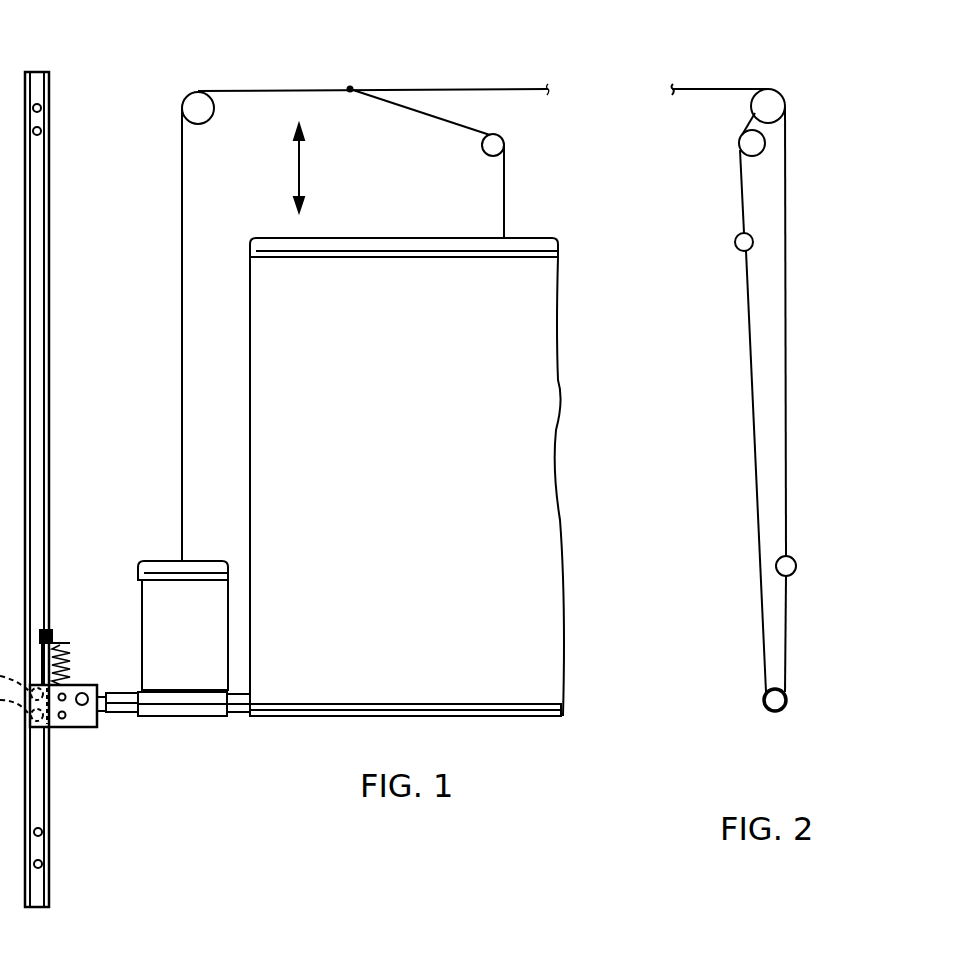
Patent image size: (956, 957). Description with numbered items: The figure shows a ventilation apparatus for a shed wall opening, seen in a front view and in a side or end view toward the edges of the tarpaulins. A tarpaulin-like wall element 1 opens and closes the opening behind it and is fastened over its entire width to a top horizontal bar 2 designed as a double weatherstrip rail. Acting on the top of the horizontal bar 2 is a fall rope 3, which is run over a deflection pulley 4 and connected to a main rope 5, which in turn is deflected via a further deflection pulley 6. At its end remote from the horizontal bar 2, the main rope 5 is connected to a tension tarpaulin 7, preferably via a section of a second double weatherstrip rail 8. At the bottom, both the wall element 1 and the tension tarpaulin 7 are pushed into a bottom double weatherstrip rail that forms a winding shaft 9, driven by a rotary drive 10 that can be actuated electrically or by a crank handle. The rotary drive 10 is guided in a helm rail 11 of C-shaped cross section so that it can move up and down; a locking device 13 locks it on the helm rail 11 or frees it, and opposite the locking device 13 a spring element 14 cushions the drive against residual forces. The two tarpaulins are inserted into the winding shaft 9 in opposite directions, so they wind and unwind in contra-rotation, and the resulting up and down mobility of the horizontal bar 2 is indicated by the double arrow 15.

In FIG. 1, the tarpaulin-like wall element 1 is at (545, 430).
In FIG. 2, the tarpaulin-like wall element 1 is at (756, 515).
In FIG. 1, the horizontal bar 2 is at (428, 252).
In FIG. 2, the horizontal bar 2 is at (740, 249).
In FIG. 1, the fall rope 3 is at (504, 200).
In FIG. 2, the fall rope 3 is at (742, 191).
In FIG. 1, the deflection pulley 4 is at (493, 146).
In FIG. 2, the deflection pulley 4 is at (748, 143).
In FIG. 1, the main rope 5 is at (495, 89).
In FIG. 2, the main rope 5 is at (708, 89).
In FIG. 1, the deflection pulley 6 is at (192, 100).
In FIG. 2, the deflection pulley 6 is at (776, 102).
In FIG. 1, the tension tarpaulin 7 is at (220, 612).
In FIG. 1, the second double weatherstrip rail 8 is at (159, 565).
In FIG. 2, the second double weatherstrip rail 8 is at (790, 562).
In FIG. 1, the winding shaft 9 is at (236, 716).
In FIG. 2, the winding shaft 9 is at (774, 710).
In FIG. 1, the rotary drive 10 is at (80, 722).
In FIG. 1, the helm rail 11 is at (37, 313).
In FIG. 1, the locking device 13 is at (52, 635).
In FIG. 1, the spring element 14 is at (70, 668).
In FIG. 1, the double arrow 15 is at (300, 172).